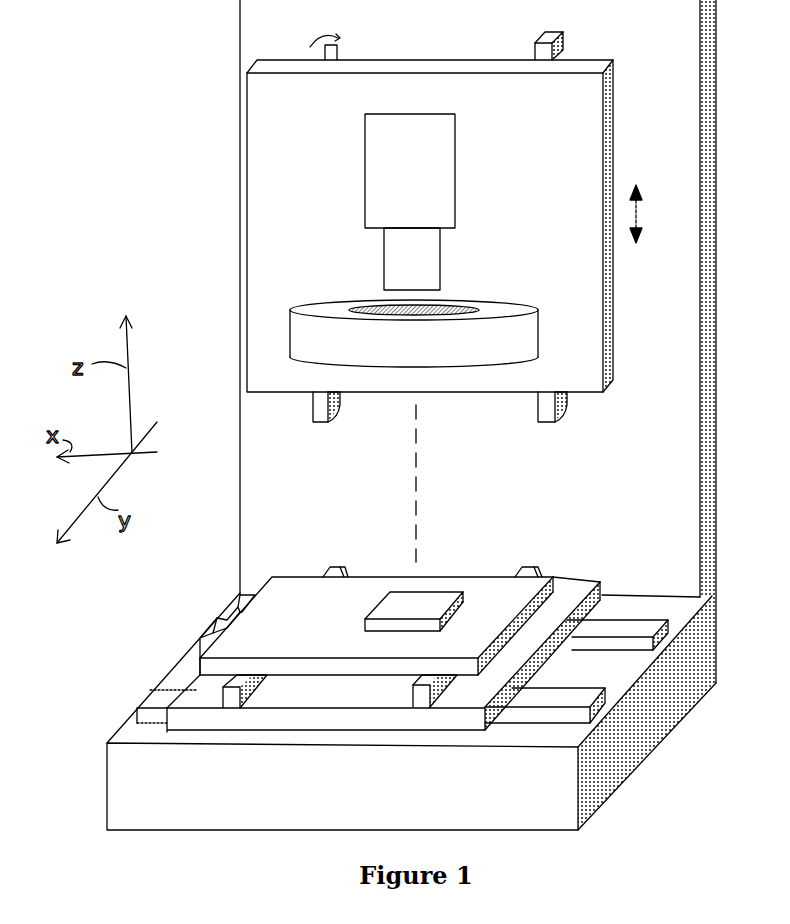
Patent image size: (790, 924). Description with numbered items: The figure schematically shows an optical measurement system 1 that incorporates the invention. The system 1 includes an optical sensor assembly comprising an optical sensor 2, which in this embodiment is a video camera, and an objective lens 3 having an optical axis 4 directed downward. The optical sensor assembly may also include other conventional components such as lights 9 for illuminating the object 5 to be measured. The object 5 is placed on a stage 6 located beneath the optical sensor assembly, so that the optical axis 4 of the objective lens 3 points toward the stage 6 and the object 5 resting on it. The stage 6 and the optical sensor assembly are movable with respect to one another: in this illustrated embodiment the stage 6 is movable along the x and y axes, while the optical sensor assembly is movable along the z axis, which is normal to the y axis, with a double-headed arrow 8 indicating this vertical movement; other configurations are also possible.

The optical measurement system 1 is at (200, 263).
The optical sensor 2 is at (455, 193).
The objective lens 3 is at (440, 268).
The optical axis 4 is at (417, 487).
The object 5 is at (460, 593).
The stage 6 is at (320, 600).
The vertical movement direction 8 is at (636, 222).
The lights 9 is at (542, 343).